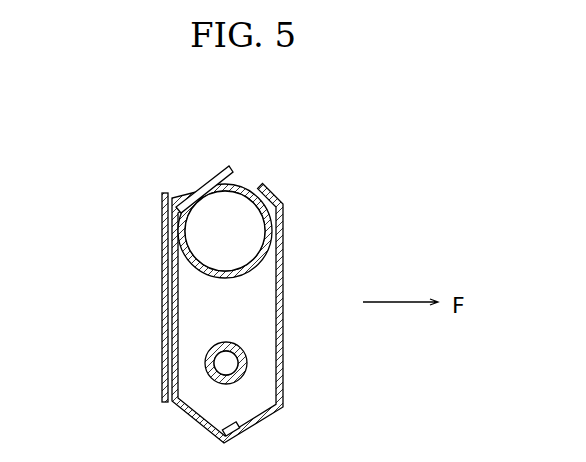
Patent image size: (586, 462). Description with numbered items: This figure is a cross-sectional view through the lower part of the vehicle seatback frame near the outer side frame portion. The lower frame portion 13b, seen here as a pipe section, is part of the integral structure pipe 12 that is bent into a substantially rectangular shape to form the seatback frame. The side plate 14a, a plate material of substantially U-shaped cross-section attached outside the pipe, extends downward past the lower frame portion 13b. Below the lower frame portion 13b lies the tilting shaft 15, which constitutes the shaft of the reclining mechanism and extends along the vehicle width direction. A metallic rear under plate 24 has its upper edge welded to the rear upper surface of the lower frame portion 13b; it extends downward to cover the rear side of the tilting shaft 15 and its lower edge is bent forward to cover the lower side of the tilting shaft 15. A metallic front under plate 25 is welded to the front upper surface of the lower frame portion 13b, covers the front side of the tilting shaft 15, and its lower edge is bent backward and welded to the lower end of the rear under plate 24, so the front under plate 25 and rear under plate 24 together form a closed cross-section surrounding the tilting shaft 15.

The integral structure pipe 12 is at (298, 209).
The lower frame portion 13b is at (265, 196).
The side plate 14a is at (162, 330).
The tilting shaft 15 is at (242, 382).
The rear under plate 24 is at (180, 204).
The front under plate 25 is at (283, 284).